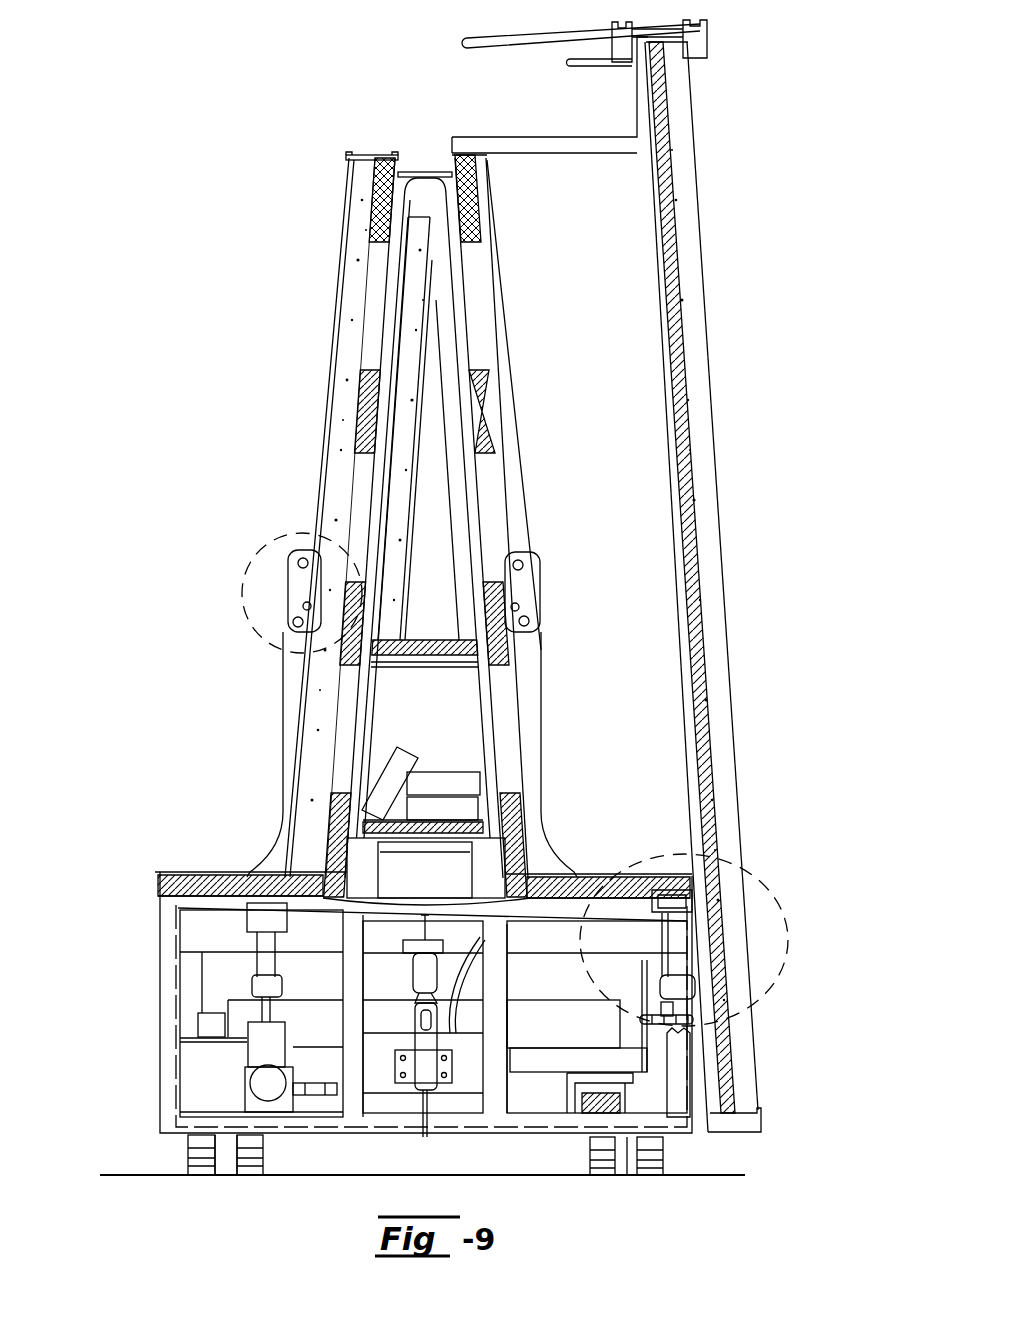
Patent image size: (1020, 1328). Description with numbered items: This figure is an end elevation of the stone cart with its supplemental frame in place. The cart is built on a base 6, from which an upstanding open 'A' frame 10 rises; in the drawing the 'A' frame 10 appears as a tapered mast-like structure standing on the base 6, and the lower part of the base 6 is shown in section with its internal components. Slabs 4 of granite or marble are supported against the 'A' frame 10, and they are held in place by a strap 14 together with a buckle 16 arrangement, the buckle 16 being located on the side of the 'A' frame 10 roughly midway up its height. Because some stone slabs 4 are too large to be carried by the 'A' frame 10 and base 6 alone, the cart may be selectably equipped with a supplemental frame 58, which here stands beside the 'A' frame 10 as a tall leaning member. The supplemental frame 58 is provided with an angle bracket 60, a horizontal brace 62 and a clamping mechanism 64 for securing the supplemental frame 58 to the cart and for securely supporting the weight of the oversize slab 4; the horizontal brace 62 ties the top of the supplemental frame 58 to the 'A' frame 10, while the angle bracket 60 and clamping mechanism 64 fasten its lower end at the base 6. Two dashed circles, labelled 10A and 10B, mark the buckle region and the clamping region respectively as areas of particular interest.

The slab 4 is at (356, 245).
The base 6 is at (160, 915).
The 'A' frame 10 is at (464, 303).
The detail region A 10A is at (242, 588).
The detail region B 10B is at (786, 858).
The strap 14 is at (318, 482).
The buckle 16 is at (292, 560).
The supplemental frame 58 is at (662, 455).
The angle bracket 60 is at (678, 866).
The horizontal brace 62 is at (493, 140).
The clamping mechanism 64 is at (666, 955).